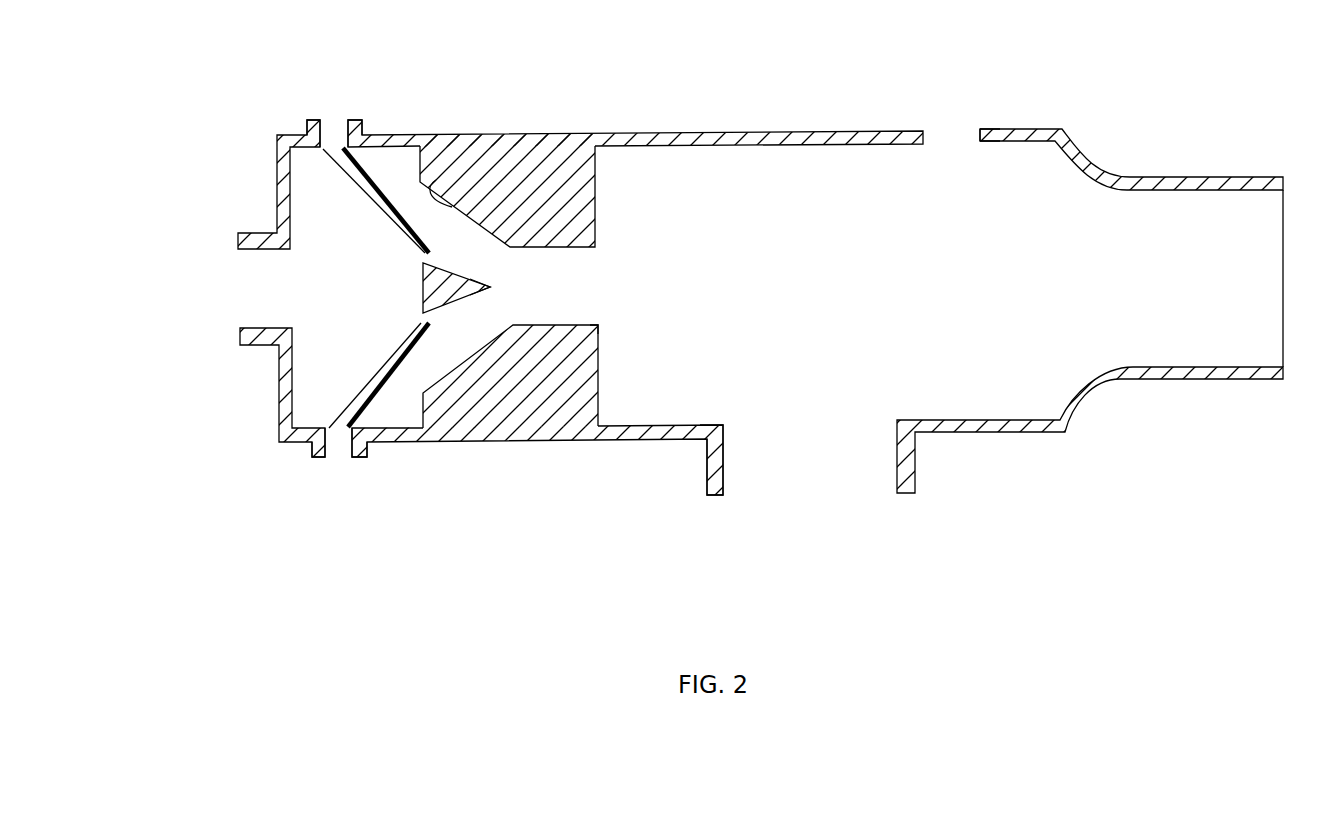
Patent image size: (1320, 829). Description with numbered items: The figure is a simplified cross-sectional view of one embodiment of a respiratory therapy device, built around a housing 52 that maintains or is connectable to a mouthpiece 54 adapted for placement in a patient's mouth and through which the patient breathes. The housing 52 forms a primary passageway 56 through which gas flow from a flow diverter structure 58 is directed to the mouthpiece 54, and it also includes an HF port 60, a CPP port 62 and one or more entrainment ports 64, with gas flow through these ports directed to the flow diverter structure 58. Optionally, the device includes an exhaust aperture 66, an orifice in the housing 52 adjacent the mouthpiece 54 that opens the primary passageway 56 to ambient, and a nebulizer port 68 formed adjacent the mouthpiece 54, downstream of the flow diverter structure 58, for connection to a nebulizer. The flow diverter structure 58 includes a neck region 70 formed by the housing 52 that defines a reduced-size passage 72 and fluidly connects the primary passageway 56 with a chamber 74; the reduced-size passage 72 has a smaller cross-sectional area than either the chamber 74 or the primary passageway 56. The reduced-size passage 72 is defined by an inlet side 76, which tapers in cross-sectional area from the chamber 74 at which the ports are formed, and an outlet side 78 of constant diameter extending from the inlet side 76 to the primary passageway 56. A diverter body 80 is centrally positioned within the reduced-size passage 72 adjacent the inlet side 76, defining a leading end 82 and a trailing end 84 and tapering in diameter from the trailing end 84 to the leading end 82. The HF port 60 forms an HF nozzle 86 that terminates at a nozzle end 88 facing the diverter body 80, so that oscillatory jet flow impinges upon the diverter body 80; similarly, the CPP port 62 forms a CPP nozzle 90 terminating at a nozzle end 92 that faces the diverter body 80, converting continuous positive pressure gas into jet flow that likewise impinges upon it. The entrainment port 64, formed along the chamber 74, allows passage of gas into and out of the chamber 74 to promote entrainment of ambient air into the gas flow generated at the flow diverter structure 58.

The housing 52 is at (635, 300).
The mouthpiece 54 is at (1092, 299).
The primary passageway 56 is at (973, 340).
The flow diverter structure 58 is at (602, 265).
The HF port 60 is at (368, 448).
The CPP port 62 is at (362, 126).
The entrainment port 64 is at (253, 235).
The exhaust aperture 66 is at (975, 133).
The nebulizer port 68 is at (705, 475).
The neck region 70 is at (502, 185).
The reduced-size passage 72 is at (543, 326).
The chamber 74 is at (322, 358).
The inlet side 76 is at (436, 180).
The outlet side 78 is at (600, 318).
The diverter body 80 is at (338, 310).
The leading end 82 is at (508, 276).
The trailing end 84 is at (420, 273).
The HF nozzle 86 is at (387, 387).
The nozzle end 88 is at (428, 322).
The CPP nozzle 90 is at (352, 178).
The nozzle end 92 is at (430, 251).